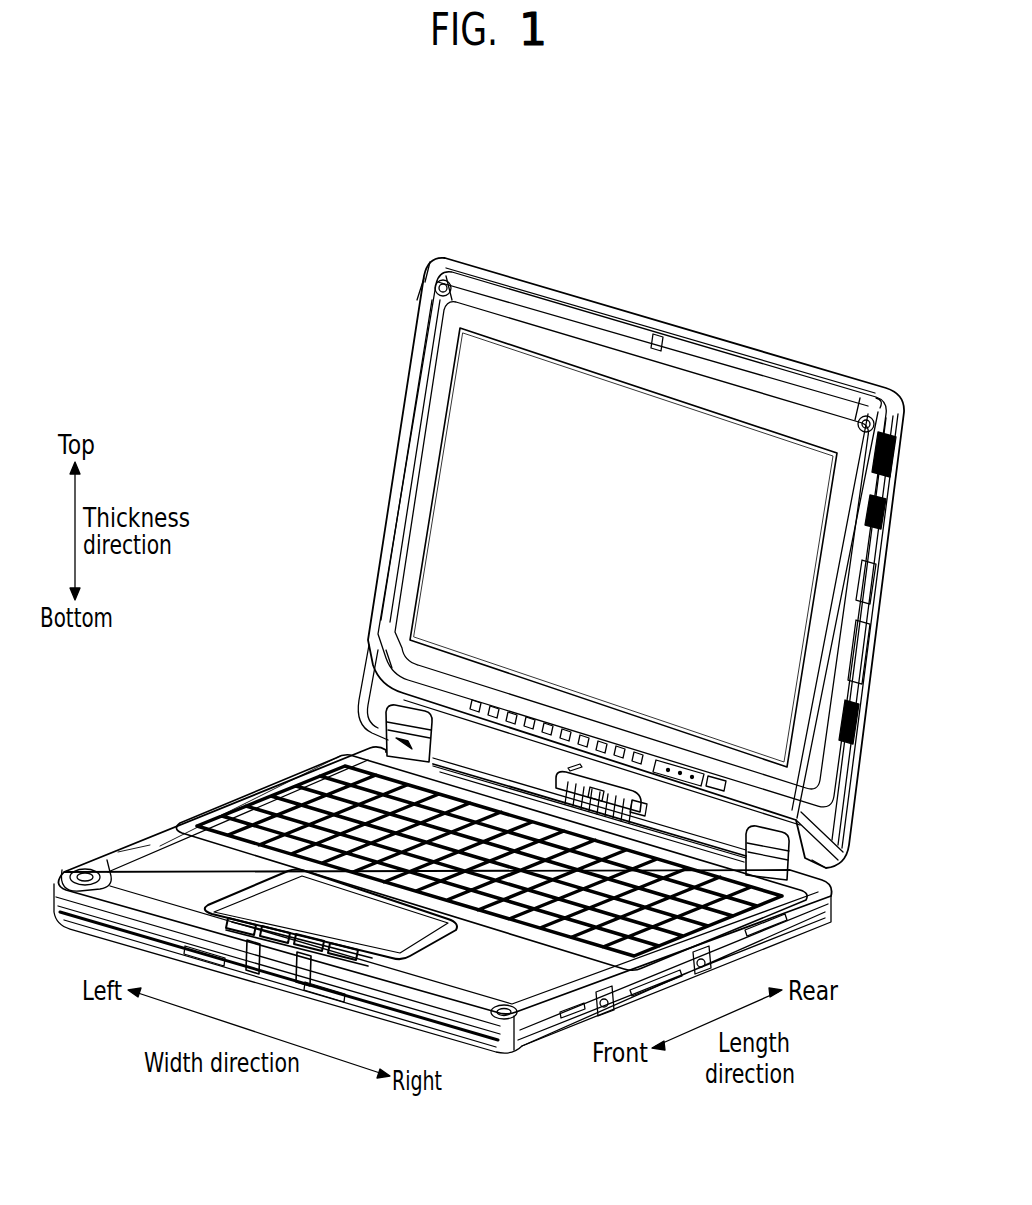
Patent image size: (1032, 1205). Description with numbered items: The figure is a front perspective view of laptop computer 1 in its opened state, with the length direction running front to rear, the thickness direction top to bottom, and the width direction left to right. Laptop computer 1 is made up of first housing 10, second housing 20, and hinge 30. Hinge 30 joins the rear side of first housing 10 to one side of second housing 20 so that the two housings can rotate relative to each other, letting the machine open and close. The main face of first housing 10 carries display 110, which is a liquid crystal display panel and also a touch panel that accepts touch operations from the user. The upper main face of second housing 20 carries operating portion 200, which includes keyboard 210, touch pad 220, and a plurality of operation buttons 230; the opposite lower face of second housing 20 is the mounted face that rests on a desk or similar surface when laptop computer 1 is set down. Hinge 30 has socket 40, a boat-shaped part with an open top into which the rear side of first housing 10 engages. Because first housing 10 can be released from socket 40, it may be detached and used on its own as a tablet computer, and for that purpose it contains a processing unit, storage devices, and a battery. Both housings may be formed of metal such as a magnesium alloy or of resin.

The laptop computer 1 is at (228, 345).
The first housing 10 is at (391, 384).
The second housing 20 is at (98, 857).
The hinge 30 is at (382, 739).
The socket 40 is at (370, 650).
The display 110 is at (455, 536).
The operating portion 200 is at (318, 718).
The keyboard 210 is at (308, 890).
The touch pad 220 is at (270, 817).
The operation buttons 230 is at (276, 914).